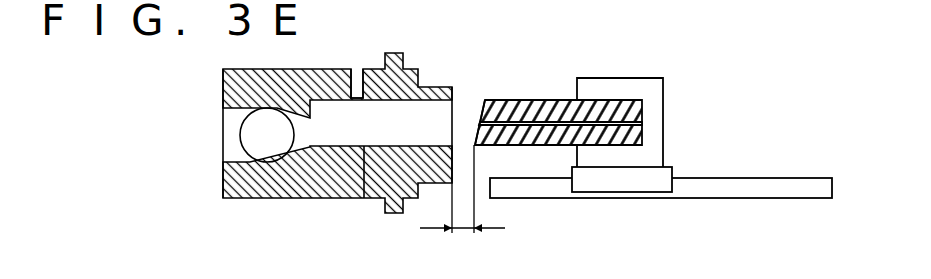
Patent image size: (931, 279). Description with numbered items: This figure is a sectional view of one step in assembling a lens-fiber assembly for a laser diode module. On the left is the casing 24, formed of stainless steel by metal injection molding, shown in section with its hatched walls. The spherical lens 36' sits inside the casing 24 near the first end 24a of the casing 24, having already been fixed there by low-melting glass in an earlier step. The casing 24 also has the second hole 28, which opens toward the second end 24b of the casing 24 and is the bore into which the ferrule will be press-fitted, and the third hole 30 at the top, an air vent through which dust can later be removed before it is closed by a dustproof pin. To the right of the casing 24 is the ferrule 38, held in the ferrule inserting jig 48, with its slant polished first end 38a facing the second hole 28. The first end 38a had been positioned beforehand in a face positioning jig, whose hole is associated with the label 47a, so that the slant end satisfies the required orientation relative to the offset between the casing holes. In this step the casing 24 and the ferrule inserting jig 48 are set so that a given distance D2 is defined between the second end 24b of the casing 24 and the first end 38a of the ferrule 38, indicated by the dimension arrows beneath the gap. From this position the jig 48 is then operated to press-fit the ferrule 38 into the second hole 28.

The casing 24 is at (292, 191).
The first end of the casing 24a is at (222, 178).
The second end of the casing 24b is at (454, 88).
The second hole 28 is at (368, 138).
The third hole 30 is at (353, 70).
The spherical lens 36' is at (224, 135).
The ferrule 38 is at (555, 100).
The first end of the ferrule 38a is at (484, 106).
The ferrule inserting jig 48 is at (665, 79).
The element 47a is at (556, 7).
The given distance D2 is at (462, 203).